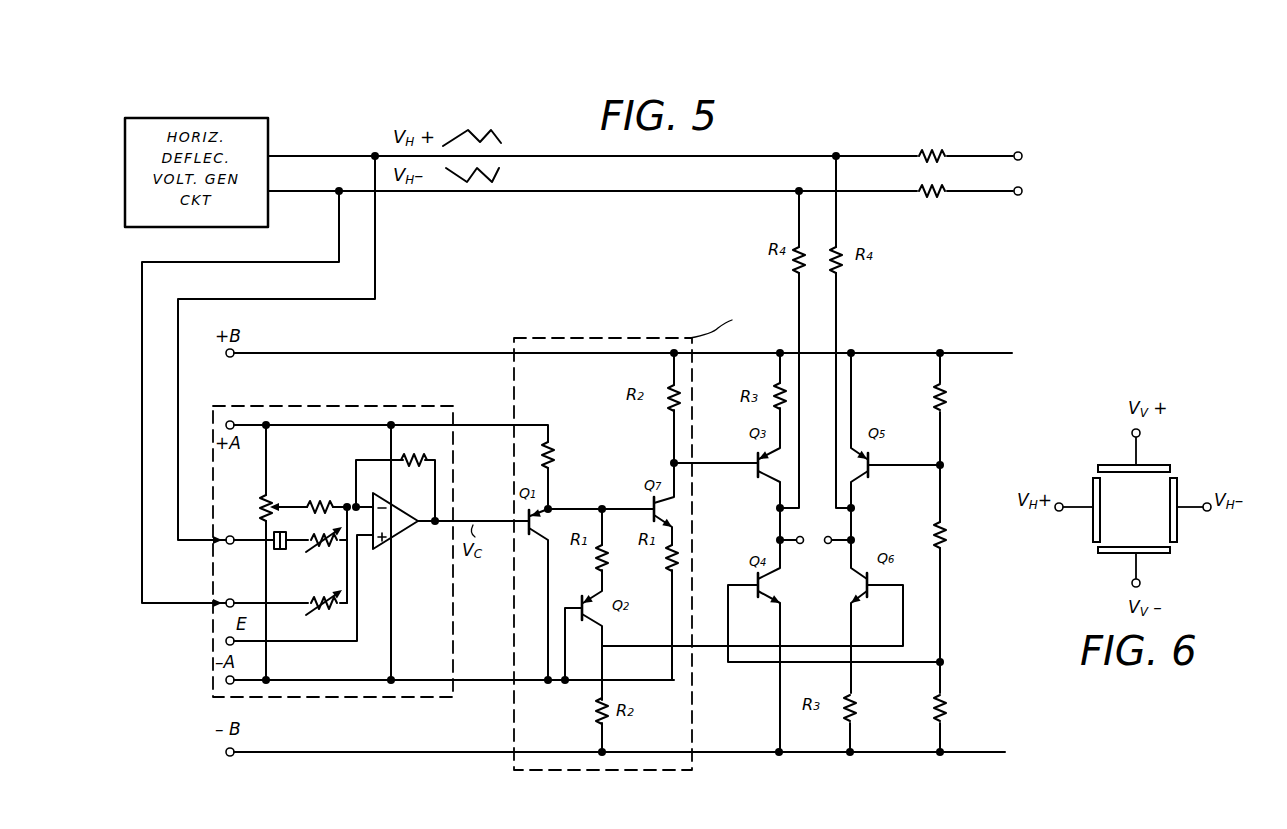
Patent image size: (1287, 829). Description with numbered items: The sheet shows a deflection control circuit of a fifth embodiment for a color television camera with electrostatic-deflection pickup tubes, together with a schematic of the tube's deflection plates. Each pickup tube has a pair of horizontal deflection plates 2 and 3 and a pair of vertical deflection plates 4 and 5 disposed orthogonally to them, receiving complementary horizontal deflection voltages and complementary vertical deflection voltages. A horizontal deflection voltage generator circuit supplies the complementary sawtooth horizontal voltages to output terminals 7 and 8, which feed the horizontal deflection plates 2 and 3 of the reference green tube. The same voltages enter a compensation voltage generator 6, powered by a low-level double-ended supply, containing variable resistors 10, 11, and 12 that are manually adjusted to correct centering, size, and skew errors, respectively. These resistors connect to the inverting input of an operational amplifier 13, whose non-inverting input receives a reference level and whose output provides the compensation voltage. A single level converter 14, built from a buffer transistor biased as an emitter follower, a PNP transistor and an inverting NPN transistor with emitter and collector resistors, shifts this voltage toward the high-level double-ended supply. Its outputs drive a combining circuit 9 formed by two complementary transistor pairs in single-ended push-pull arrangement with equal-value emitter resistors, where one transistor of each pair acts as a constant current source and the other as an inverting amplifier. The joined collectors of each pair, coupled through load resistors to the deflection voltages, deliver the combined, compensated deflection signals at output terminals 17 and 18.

In FIG. 5, the horizontal deflection plate 2 is at (405, 408).
In FIG. 6, the horizontal deflection plate 2 is at (1092, 522).
In FIG. 6, the horizontal deflection plate 3 is at (1179, 490).
In FIG. 6, the vertical deflection plate 4 is at (1152, 466).
In FIG. 6, the vertical deflection plate 5 is at (1160, 555).
In FIG. 5, the compensation voltage generator 6 is at (454, 460).
In FIG. 5, the output terminal 7 is at (1019, 152).
In FIG. 5, the output terminal 8 is at (1017, 195).
In FIG. 5, the combining circuit 9 is at (819, 624).
In FIG. 5, the variable resistor 10 is at (262, 507).
In FIG. 5, the variable resistor 11 is at (322, 558).
In FIG. 5, the variable resistor 12 is at (326, 616).
In FIG. 5, the operational amplifier 13 is at (402, 539).
In FIG. 5, the level converter 14 is at (698, 386).
In FIG. 5, the output terminal 17 is at (818, 524).
In FIG. 5, the output terminal 18 is at (828, 544).